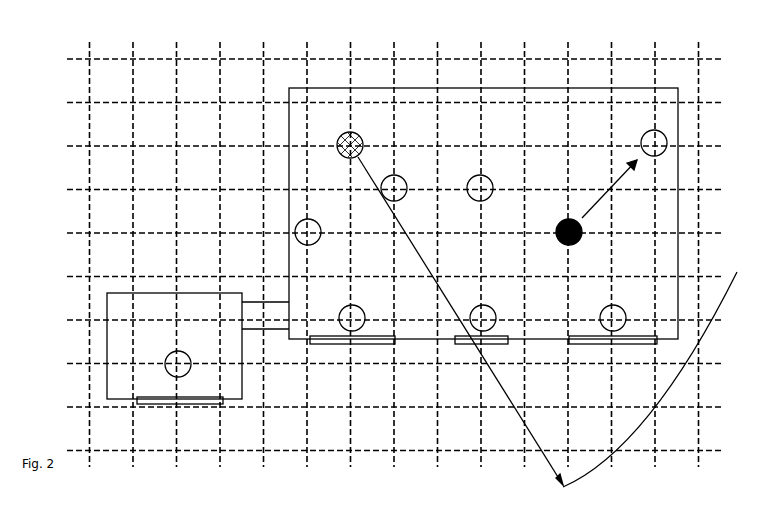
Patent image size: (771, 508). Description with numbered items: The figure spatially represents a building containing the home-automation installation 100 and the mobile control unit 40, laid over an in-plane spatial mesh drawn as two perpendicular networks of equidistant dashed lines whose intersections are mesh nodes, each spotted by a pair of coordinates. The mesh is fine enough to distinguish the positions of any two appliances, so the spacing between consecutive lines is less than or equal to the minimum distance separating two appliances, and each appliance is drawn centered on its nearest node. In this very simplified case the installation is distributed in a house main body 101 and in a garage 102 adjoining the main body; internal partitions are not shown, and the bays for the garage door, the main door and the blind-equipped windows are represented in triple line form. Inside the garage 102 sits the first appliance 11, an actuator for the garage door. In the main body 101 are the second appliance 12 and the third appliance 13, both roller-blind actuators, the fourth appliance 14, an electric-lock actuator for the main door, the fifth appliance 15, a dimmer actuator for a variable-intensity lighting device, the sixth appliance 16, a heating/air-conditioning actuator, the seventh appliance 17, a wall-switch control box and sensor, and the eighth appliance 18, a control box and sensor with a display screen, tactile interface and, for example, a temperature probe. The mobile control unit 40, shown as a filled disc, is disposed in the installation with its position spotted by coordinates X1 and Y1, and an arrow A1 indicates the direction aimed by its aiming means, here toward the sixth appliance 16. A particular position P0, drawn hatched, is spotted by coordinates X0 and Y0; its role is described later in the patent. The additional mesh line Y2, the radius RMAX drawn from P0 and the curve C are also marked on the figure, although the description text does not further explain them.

The first appliance 11 is at (178, 364).
The second appliance 12 is at (352, 318).
The third appliance 13 is at (613, 318).
The fourth appliance 14 is at (483, 318).
The fifth appliance 15 is at (480, 188).
The sixth appliance 16 is at (654, 143).
The seventh appliance 17 is at (308, 232).
The eighth appliance 18 is at (394, 188).
The mobile control unit 40 is at (565, 245).
The home-automation installation 100 is at (347, 424).
The house main body 101 is at (289, 133).
The garage 102 is at (148, 293).
The particular position P0 is at (363, 141).
The arrow A1 is at (609, 189).
The maximum radius RMAX is at (460, 326).
The circle boundary C is at (655, 371).
The coordinate X0 is at (67, 146).
The coordinate X1 is at (67, 233).
The coordinate Y0 is at (350, 42).
The coordinate Y1 is at (568, 42).
The Y2 axis line Y2 is at (655, 42).